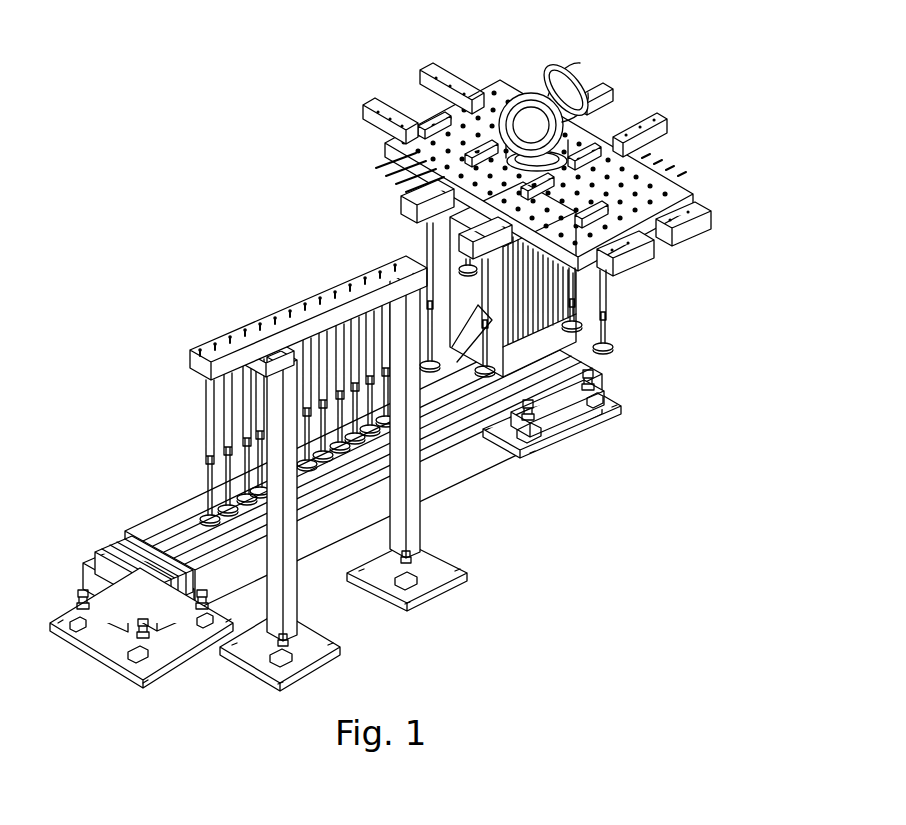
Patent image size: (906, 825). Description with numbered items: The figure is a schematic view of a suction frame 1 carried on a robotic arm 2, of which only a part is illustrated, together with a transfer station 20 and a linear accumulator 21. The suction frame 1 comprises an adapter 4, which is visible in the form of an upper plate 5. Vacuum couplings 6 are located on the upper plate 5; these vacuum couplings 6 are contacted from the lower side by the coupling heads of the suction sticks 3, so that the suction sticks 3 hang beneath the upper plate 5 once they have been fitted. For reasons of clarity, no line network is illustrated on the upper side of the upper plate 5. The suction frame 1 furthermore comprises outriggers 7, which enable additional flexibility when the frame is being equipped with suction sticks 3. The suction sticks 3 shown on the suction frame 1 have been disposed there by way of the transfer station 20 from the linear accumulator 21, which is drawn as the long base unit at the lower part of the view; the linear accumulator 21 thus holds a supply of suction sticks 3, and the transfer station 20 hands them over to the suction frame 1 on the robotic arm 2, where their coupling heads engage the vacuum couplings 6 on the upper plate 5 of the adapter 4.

The suction frame 1 is at (340, 141).
The robotic arm 2 is at (561, 79).
The suction sticks 3 is at (427, 246).
The adapter 4 is at (702, 180).
The upper plate 5 is at (694, 172).
The vacuum couplings 6 is at (425, 120).
The outriggers 7 is at (705, 232).
The transfer station 20 is at (506, 458).
The linear accumulator 21 is at (247, 303).